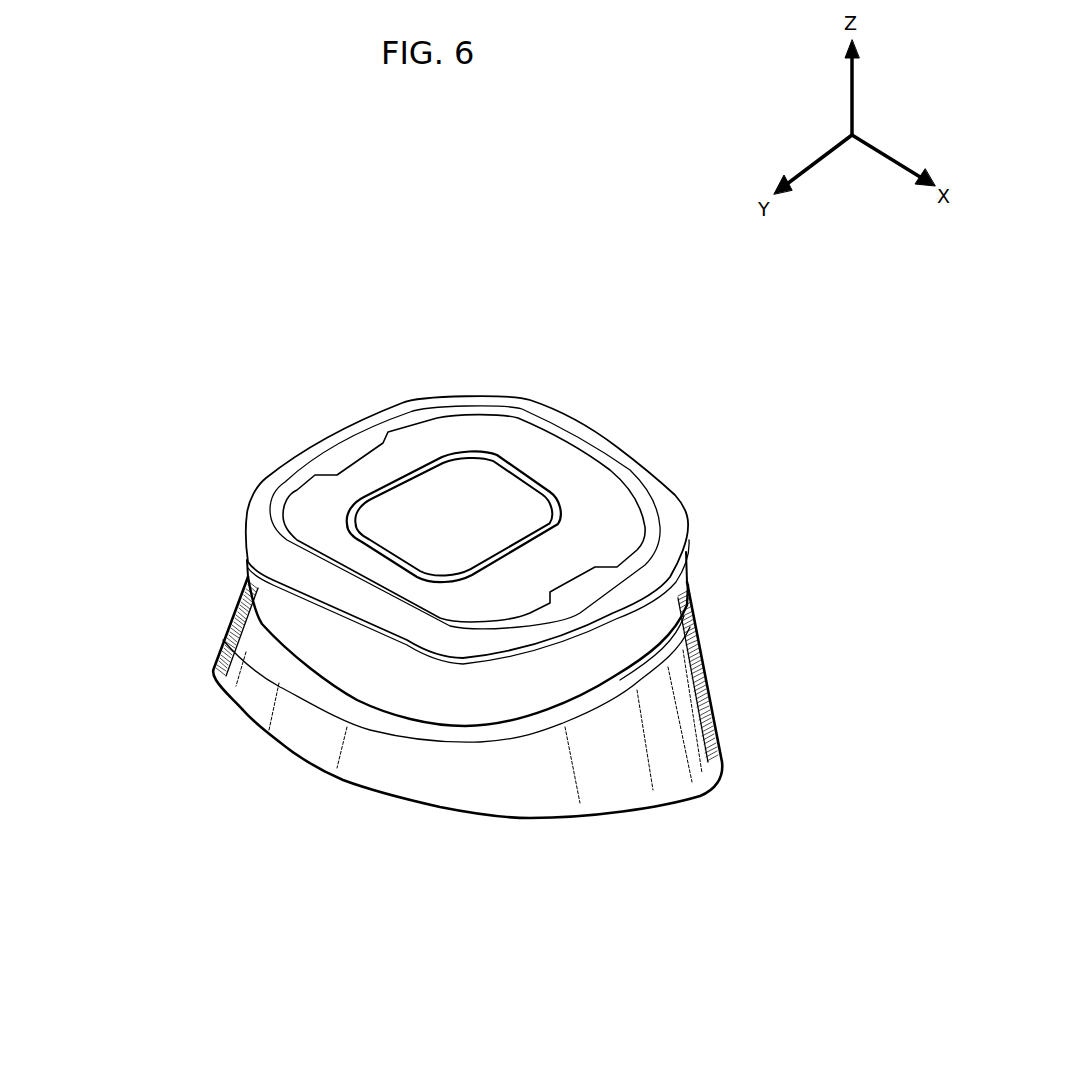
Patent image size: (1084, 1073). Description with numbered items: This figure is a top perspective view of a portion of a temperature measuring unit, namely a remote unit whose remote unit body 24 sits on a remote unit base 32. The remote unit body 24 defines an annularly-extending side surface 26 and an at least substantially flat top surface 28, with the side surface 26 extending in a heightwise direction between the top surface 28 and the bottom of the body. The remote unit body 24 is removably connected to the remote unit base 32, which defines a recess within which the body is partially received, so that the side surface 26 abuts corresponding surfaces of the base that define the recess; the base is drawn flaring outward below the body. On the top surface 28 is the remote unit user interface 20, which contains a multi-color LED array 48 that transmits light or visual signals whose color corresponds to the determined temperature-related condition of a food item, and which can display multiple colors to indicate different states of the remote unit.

The remote unit user interface 20 is at (457, 486).
The remote unit body 24 is at (118, 386).
The annularly-extending side surface 26 is at (667, 604).
The top surface 28 is at (553, 464).
The remote unit base 32 is at (553, 765).
The multi-color LED array 48 is at (561, 510).